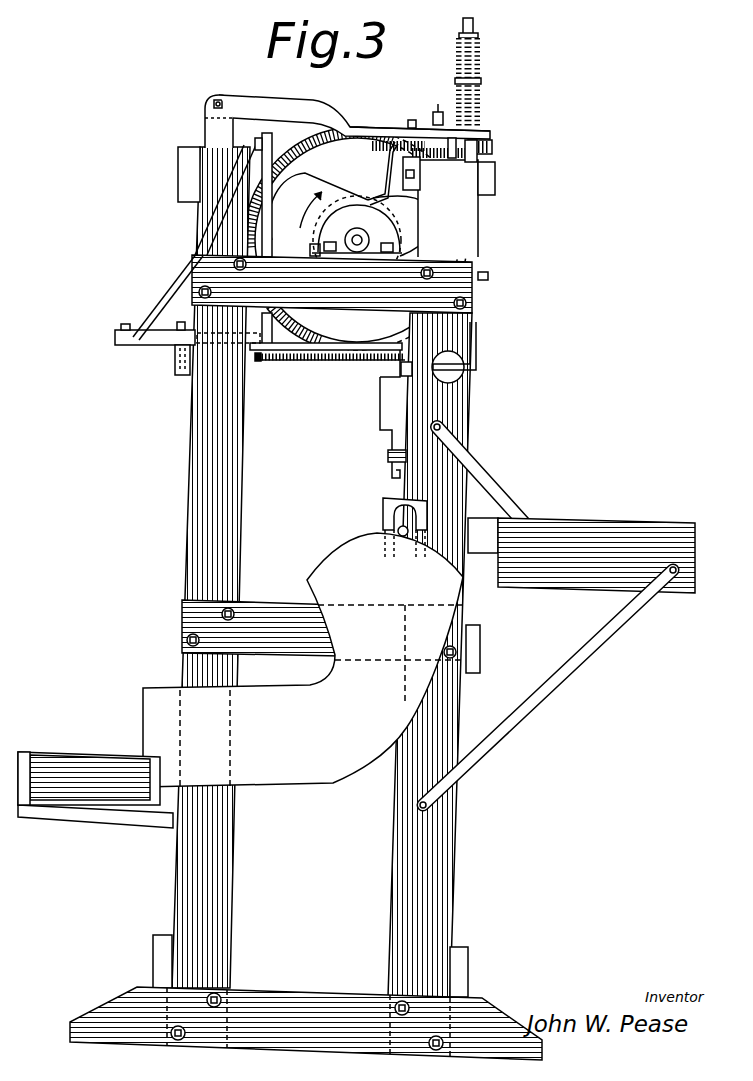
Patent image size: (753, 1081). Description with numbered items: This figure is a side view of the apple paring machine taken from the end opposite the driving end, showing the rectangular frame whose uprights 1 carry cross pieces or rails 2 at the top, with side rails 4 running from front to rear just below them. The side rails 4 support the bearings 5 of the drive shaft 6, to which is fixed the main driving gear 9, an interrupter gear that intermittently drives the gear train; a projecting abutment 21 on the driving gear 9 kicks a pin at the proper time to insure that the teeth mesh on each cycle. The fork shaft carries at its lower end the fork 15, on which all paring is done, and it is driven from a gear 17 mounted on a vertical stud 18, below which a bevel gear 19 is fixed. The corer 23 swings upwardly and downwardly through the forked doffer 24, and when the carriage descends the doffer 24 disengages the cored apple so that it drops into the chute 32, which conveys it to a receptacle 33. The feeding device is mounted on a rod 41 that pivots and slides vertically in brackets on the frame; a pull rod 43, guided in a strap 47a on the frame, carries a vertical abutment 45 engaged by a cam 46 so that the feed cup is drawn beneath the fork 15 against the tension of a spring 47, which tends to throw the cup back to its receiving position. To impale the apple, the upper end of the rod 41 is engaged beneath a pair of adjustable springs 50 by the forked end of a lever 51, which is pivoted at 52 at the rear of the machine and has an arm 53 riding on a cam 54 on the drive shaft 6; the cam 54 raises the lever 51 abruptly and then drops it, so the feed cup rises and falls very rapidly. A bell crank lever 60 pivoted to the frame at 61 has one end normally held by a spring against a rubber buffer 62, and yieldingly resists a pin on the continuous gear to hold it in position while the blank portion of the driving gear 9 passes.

The uprights 1 is at (463, 411).
The cross pieces or rails 2 is at (496, 184).
The side rails 4 is at (480, 281).
The bearings 5 is at (318, 251).
The drive shaft 6 is at (357, 235).
The main driving gear 9 is at (340, 136).
The fork 15 is at (396, 396).
The gear 17 is at (493, 150).
The vertical stud 18 is at (438, 110).
The bevel gear 19 is at (408, 147).
The projecting abutment 21 is at (353, 381).
The corer 23 is at (409, 532).
The doffer 24 is at (382, 507).
The chute 32 is at (304, 660).
The receptacle 33 is at (79, 763).
The rod 41 is at (475, 22).
The pull rod 43 is at (350, 355).
The vertical abutment 45 is at (273, 333).
The cam 46 is at (301, 189).
The spring 47 is at (286, 363).
The strap 47a is at (187, 314).
The adjustable springs 50 is at (481, 98).
The lever 51 is at (356, 126).
The pivot 52 is at (232, 97).
The arm 53 is at (384, 187).
The cam 54 is at (404, 237).
The bell crank lever 60 is at (478, 329).
The pivot 61 is at (468, 304).
The rubber buffer 62 is at (466, 361).